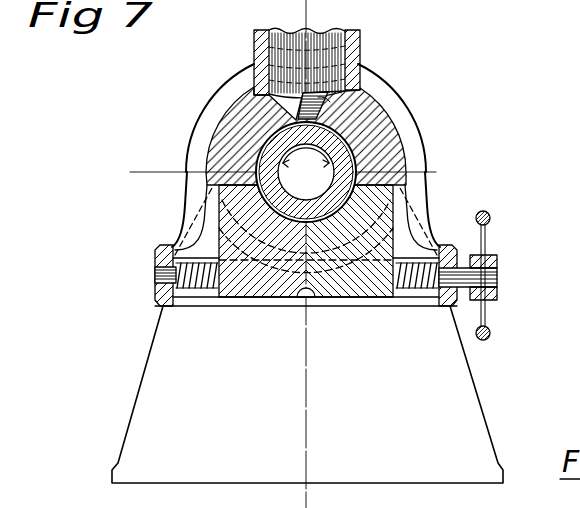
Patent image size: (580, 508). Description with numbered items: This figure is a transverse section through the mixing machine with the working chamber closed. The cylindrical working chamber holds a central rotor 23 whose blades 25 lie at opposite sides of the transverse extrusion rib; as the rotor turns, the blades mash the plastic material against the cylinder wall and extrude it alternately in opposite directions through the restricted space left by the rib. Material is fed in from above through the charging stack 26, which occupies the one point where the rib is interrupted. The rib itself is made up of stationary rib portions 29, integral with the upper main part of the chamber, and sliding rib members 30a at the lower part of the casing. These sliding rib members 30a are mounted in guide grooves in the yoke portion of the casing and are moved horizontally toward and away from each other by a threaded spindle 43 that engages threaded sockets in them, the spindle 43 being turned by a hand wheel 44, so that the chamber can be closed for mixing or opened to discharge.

The rotor 23 is at (353, 163).
The blades 25 is at (345, 92).
The charging stack 26 is at (362, 42).
The stationary rib portions 29 is at (368, 133).
The sliding rib members 30a is at (447, 192).
The threaded spindle 43 is at (420, 287).
The hand wheel 44 is at (487, 317).